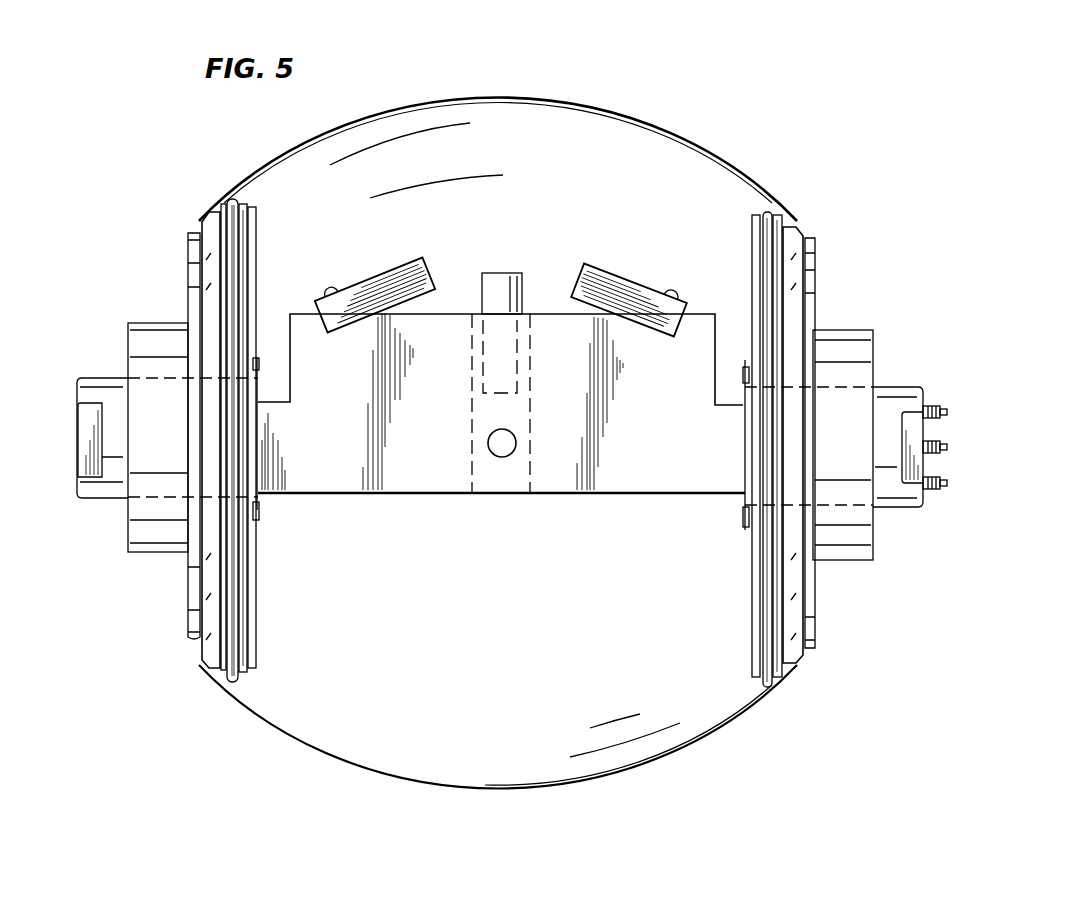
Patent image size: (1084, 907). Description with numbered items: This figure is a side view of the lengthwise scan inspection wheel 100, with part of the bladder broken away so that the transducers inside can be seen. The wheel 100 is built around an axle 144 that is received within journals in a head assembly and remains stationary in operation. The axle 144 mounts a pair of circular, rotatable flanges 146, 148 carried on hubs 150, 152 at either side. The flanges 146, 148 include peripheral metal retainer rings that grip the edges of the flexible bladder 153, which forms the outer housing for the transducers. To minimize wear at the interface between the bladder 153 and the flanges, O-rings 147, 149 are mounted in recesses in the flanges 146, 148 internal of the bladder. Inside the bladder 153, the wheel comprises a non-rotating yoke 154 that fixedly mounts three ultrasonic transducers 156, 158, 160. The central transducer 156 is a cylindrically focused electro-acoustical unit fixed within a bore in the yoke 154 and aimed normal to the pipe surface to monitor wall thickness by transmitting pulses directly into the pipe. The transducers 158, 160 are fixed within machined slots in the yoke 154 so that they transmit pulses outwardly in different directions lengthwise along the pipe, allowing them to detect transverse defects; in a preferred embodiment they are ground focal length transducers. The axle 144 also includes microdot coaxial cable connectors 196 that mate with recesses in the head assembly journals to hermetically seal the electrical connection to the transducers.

The inspection wheel 100 is at (755, 172).
The axle 144 is at (92, 378).
The flange 146 is at (813, 242).
The O-ring 147 is at (780, 207).
The flange 148 is at (193, 248).
The O-ring 149 is at (228, 196).
The hub 150 is at (840, 337).
The hub 152 is at (160, 553).
The bladder 153 is at (637, 120).
The yoke 154 is at (600, 493).
The transducer 156 is at (500, 272).
The transducer 158 is at (393, 278).
The transducer 160 is at (637, 278).
The microdot coaxial cable connector 196 is at (932, 503).